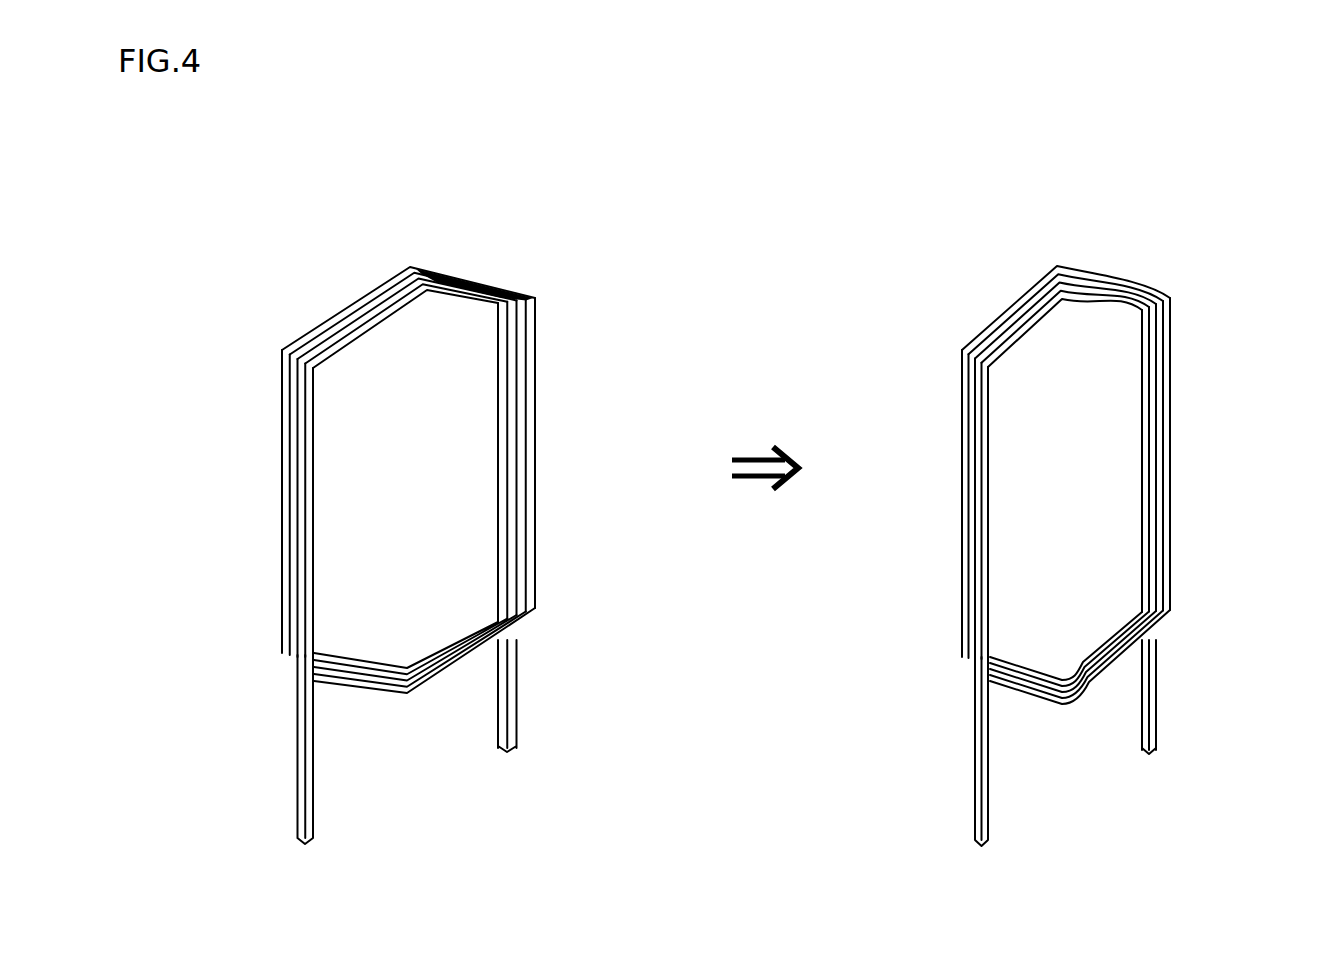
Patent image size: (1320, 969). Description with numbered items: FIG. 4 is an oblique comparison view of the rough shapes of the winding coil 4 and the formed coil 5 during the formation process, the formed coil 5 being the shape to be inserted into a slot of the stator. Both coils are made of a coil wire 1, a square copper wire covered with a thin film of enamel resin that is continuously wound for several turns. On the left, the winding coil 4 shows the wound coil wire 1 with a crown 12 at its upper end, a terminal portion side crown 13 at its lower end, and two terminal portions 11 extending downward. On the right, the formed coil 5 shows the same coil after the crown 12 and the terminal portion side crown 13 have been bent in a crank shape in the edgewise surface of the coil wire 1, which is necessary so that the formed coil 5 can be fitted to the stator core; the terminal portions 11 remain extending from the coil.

The coil wire 1 is at (786, 384).
The winding coil 4 is at (442, 190).
The formed coil 5 is at (1085, 190).
The terminal portion 11 is at (295, 803).
The crown 12 is at (380, 278).
The terminal portion side crown 13 is at (425, 695).